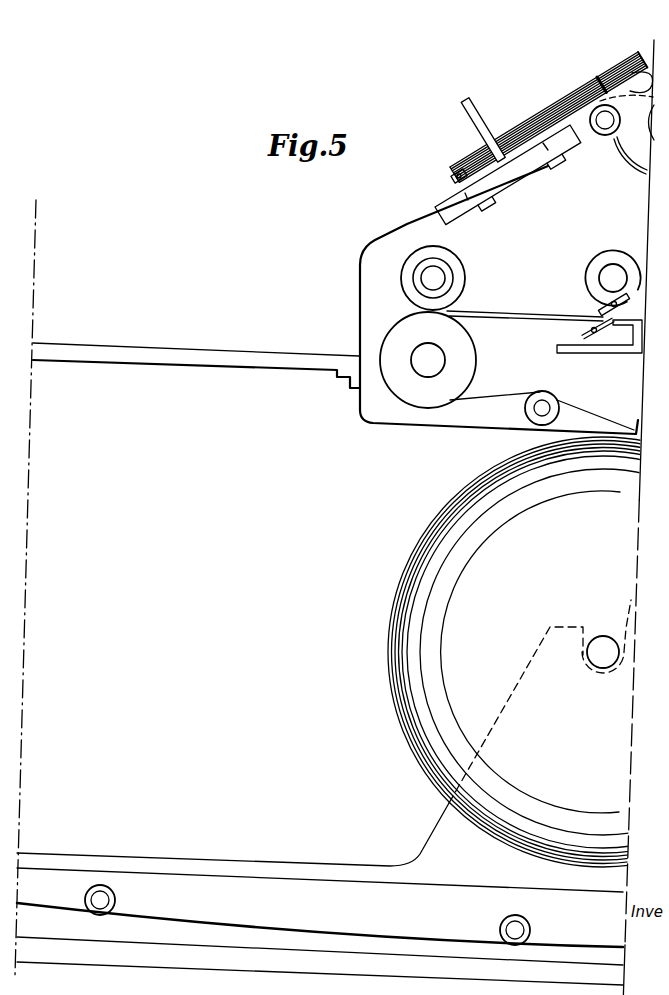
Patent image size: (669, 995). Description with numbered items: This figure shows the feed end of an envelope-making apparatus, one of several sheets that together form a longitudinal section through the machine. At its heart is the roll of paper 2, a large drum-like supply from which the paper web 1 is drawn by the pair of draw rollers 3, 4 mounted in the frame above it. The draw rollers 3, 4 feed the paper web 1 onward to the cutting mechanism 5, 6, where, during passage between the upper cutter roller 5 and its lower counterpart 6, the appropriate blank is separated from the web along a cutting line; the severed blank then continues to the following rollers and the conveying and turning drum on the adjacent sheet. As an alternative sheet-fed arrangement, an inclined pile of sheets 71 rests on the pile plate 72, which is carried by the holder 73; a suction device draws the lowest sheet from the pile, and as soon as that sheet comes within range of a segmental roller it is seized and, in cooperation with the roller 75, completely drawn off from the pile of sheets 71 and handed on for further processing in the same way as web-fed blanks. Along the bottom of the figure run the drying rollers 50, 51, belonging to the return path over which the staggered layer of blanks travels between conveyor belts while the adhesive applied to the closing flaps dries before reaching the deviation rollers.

The paper web 1 is at (487, 398).
The roll of paper 2 is at (393, 617).
The draw roller 3 is at (397, 382).
The draw roller 4 is at (400, 272).
The upper cutter roller 5 is at (588, 272).
The cutting mechanism roller 6 is at (599, 343).
The roller 50 is at (524, 921).
The roller 51 is at (115, 900).
The pile of sheets 71 is at (528, 119).
The pile plate 72 is at (499, 163).
The holder 73 is at (476, 127).
The roller 75 is at (604, 135).